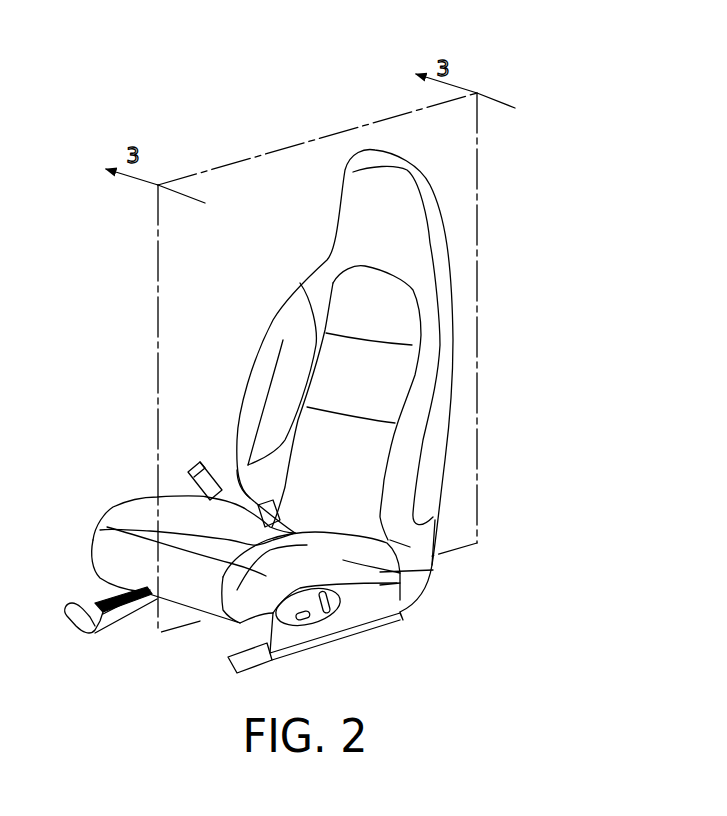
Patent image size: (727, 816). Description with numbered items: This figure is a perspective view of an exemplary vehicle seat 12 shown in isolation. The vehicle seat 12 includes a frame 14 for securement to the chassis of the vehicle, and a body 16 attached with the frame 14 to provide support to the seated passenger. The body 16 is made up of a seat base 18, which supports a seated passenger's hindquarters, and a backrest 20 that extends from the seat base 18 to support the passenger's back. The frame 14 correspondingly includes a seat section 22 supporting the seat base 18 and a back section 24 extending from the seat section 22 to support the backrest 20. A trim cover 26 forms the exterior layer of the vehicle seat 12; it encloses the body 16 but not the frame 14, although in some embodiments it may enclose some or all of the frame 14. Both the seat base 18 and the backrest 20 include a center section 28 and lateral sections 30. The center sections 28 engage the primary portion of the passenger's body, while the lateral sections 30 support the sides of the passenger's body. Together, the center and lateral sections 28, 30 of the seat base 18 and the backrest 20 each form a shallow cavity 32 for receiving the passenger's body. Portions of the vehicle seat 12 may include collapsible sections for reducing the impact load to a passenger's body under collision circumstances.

The vehicle seat 12 is at (327, 394).
The frame 14 is at (105, 640).
The body 16 is at (152, 296).
The seat base 18 is at (110, 495).
The backrest 20 is at (458, 430).
The seat section 22 is at (233, 665).
The back section 24 is at (448, 480).
The trim cover 26 is at (263, 417).
The center section 28 is at (305, 290).
The lateral sections 30 is at (347, 362).
The shallow cavity 32 is at (390, 300).